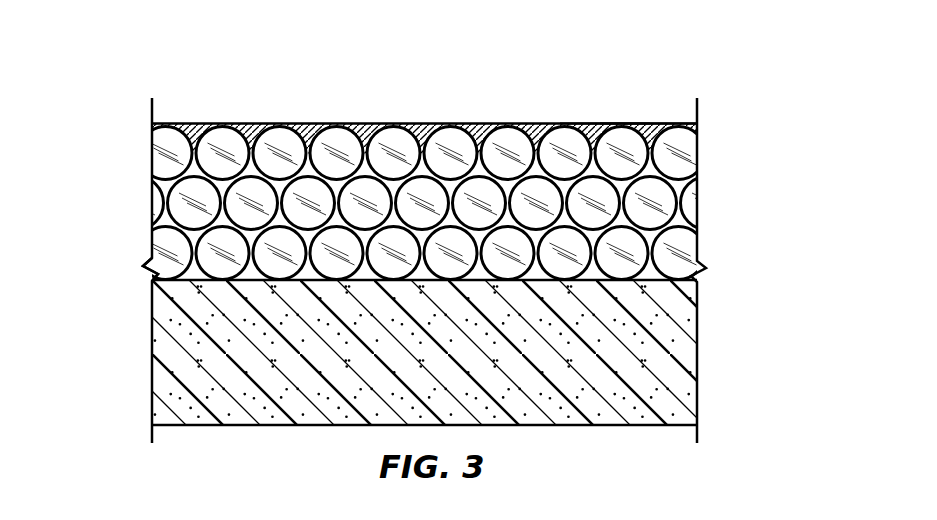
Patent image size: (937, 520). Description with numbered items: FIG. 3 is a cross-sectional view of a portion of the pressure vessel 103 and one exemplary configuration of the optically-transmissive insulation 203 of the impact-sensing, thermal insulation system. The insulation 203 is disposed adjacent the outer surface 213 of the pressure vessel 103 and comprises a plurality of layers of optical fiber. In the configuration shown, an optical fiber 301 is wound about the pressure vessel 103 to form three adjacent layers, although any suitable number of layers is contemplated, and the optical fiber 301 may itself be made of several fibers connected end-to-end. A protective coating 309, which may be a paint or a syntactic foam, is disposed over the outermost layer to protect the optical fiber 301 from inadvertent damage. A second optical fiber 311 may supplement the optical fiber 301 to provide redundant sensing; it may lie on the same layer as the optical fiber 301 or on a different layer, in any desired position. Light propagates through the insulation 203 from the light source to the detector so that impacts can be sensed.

The pressure vessel 103 is at (449, 370).
The optically-transmissive insulation 203 is at (388, 116).
The outer surface 213 is at (152, 279).
The optical fiber 301 is at (613, 122).
The protective coating 309 is at (200, 122).
The optical fiber 311 is at (673, 122).